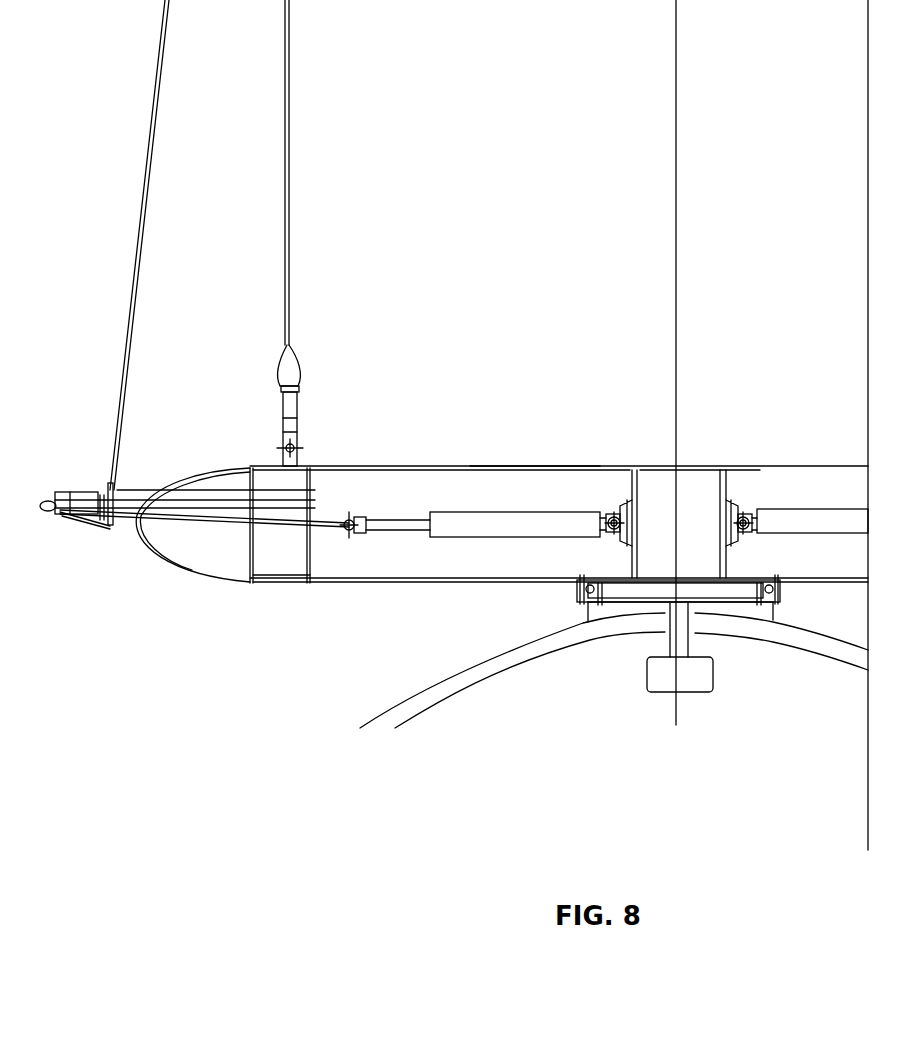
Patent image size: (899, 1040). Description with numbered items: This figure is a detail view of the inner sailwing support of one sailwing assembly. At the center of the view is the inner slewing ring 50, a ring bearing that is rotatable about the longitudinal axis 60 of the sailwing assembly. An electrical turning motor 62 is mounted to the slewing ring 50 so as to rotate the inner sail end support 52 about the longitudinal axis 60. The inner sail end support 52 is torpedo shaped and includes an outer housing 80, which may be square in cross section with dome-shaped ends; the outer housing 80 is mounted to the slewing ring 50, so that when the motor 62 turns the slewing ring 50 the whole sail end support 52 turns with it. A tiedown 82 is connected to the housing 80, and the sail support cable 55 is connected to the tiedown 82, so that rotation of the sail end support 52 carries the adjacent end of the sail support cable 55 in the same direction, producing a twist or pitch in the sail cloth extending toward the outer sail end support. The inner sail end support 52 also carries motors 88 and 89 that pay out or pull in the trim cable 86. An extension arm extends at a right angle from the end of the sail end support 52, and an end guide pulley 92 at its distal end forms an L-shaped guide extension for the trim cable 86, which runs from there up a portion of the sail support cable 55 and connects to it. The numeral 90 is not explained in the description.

The slewing ring 50 is at (710, 595).
The inner sail end support 52 is at (548, 456).
The sail support cable 55 is at (290, 213).
The longitudinal axis 60 is at (675, 258).
The motor 62 is at (660, 690).
The outer housing 80 is at (470, 463).
The tiedown 82 is at (283, 420).
The trim cable 86 is at (146, 178).
The motor 88 is at (475, 528).
The motor 89 is at (800, 518).
The nose section 90 is at (232, 485).
The end guide pulley 92 is at (78, 498).